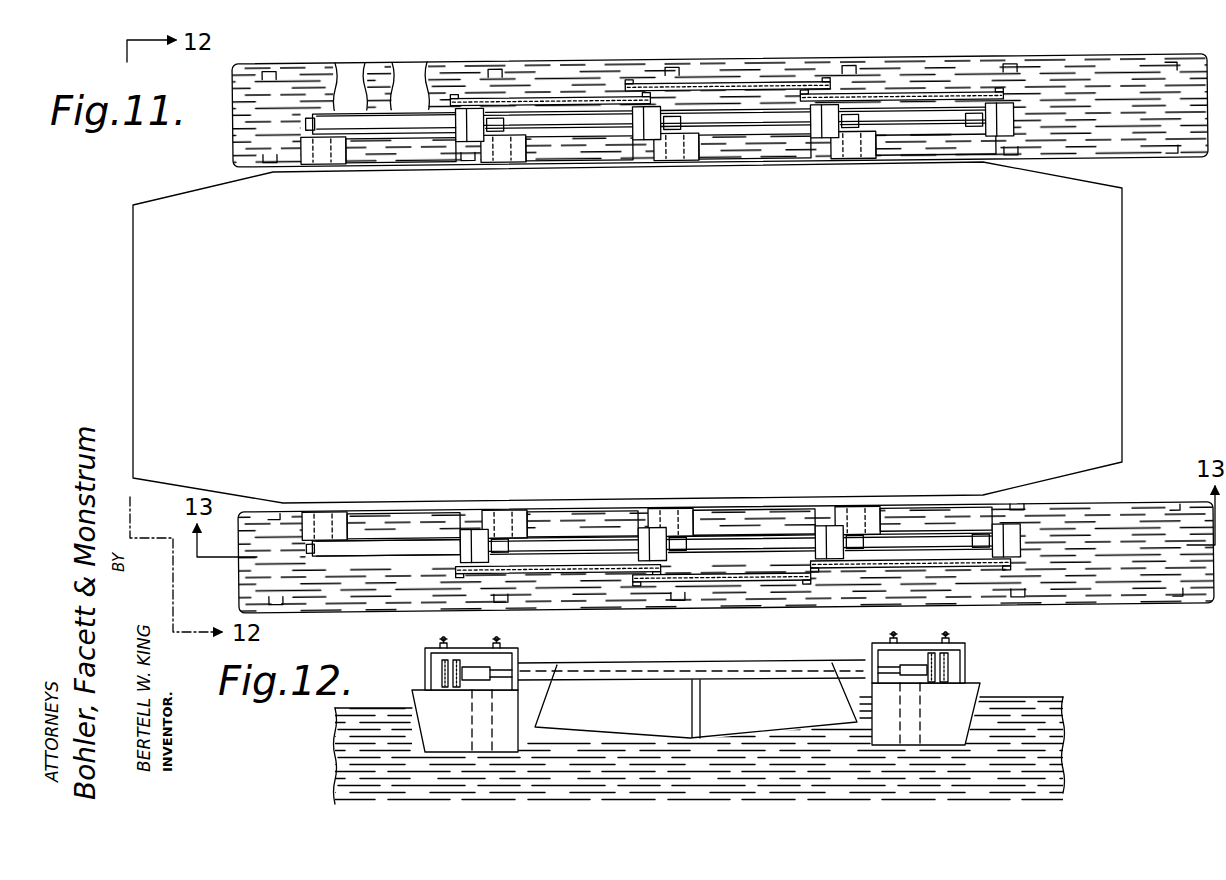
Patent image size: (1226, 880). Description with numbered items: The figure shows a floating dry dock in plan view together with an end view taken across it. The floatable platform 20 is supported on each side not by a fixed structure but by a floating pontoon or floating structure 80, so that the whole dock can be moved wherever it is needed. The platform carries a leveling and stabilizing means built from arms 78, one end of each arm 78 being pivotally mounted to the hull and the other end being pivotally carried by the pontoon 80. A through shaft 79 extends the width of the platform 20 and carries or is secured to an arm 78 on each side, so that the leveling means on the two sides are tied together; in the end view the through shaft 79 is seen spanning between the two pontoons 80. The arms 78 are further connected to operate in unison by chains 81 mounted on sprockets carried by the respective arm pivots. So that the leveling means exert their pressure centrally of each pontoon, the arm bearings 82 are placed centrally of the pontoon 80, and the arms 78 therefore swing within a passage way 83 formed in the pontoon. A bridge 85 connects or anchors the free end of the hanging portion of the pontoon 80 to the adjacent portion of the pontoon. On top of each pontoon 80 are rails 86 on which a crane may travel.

In FIG. 11, the floatable platform 20 is at (131, 268).
In FIG. 12, the floatable platform 20 is at (645, 688).
In FIG. 11, the arm 78 is at (396, 127).
In FIG. 12, the through shaft 79 is at (767, 663).
In FIG. 11, the pontoon 80 is at (248, 120).
In FIG. 12, the pontoon 80 is at (696, 697).
In FIG. 11, the chain 81 is at (548, 100).
In FIG. 12, the chain 81 is at (455, 670).
In FIG. 11, the arm bearing 82 is at (455, 112).
In FIG. 11, the passage way 83 is at (338, 118).
In FIG. 11, the bridge 85 is at (320, 155).
In FIG. 12, the rail 86 is at (500, 637).